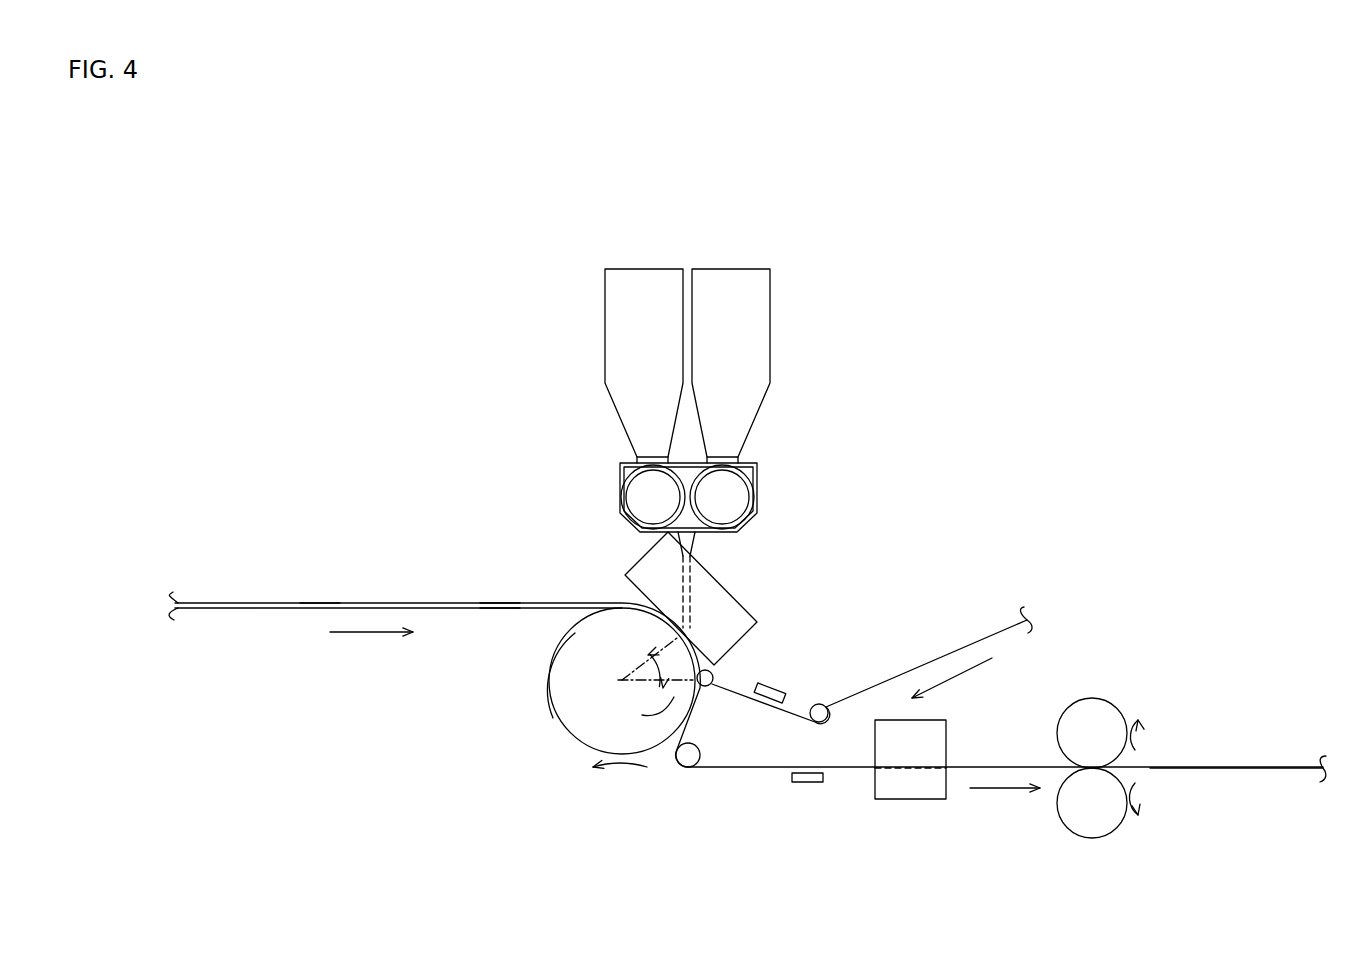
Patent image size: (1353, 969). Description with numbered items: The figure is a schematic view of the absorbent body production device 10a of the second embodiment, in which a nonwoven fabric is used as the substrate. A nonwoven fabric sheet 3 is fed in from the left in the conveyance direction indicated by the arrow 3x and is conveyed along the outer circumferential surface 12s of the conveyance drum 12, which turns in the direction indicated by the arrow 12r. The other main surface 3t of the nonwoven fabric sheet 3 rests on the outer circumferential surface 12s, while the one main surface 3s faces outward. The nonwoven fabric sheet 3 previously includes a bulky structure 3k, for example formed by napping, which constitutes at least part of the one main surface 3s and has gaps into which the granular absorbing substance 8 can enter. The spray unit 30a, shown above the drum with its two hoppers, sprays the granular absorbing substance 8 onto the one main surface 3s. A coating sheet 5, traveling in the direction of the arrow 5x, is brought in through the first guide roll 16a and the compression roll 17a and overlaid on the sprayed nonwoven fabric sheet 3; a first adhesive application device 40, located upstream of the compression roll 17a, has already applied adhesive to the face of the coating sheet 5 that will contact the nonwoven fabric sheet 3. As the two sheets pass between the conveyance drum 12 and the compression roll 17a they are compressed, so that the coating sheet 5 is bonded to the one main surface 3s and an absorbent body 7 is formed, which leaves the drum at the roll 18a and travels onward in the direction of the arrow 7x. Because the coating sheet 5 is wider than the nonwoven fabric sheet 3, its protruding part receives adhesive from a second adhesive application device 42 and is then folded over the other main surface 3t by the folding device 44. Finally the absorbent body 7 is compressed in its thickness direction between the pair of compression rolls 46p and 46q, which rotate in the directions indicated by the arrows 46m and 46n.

The absorbent body production device 10a is at (1072, 218).
The extrusion unit 30a is at (822, 437).
The granular absorbing substance 8 is at (682, 580).
The conveyance drum 12 is at (580, 733).
The outer circumferential surface 12s is at (553, 718).
The rotation direction of roller 12r is at (627, 770).
The nonwoven fabric sheet 3 is at (250, 603).
The bulky structure 3k is at (320, 603).
The one main surface 3s is at (500, 604).
The other main surface 3t is at (498, 610).
The conveyance direction of first film 3x is at (368, 634).
The compression roll 17a is at (712, 686).
The peeling roller 18a is at (701, 755).
The coating sheet 5 is at (975, 643).
The first guide roll 16a is at (822, 704).
The first adhesive application device 40 is at (779, 683).
The conveyance direction of second film 5x is at (957, 678).
The second adhesive application device 42 is at (808, 783).
The folding device 44 is at (909, 800).
The conveyance direction of laminate 7x is at (996, 790).
The compression roll 46p is at (1092, 698).
The compression roll 46q is at (1092, 838).
The arrow 46m is at (1142, 740).
The arrow 46n is at (1142, 799).
The absorbent body 7 is at (1255, 768).